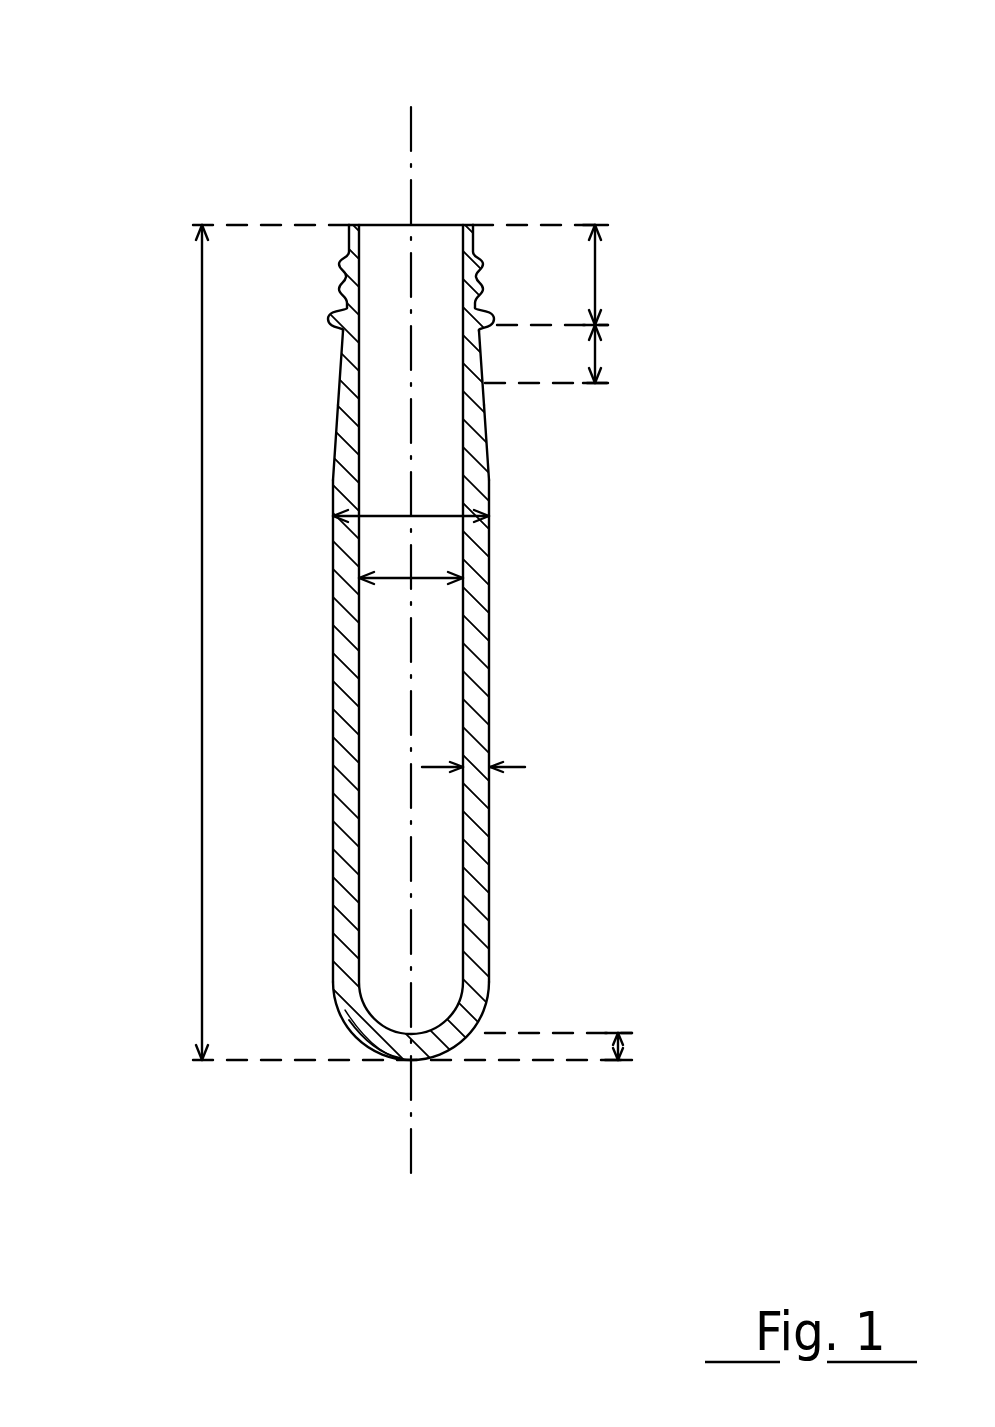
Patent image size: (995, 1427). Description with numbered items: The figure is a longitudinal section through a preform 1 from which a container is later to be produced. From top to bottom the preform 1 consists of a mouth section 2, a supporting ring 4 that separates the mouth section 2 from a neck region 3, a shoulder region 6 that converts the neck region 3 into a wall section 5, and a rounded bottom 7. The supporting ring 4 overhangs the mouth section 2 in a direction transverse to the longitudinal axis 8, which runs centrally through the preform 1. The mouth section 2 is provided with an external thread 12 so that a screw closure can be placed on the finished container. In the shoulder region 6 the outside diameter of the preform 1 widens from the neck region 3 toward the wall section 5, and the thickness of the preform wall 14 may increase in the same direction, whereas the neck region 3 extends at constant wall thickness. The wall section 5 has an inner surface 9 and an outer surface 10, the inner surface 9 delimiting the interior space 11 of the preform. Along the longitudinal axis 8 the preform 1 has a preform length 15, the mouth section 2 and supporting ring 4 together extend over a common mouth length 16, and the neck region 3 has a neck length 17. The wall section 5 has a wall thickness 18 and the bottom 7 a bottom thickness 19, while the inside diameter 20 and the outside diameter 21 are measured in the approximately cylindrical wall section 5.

The preform 1 is at (478, 658).
The mouth section 2 is at (435, 245).
The neck region 3 is at (338, 352).
The supporting ring 4 is at (327, 322).
The wall section 5 is at (331, 612).
The shoulder region 6 is at (332, 412).
The bottom 7 is at (394, 1060).
The longitudinal axis 8 is at (417, 122).
The inner surface 9 is at (457, 705).
The outer surface 10 is at (492, 704).
The interior space 11 is at (436, 845).
The external thread 12 is at (478, 252).
The preform wall 14 is at (473, 553).
The preform length 15 is at (202, 843).
The mouth length 16 is at (595, 272).
The neck length 17 is at (600, 352).
The wall thickness 18 is at (513, 770).
The bottom thickness 19 is at (627, 1041).
The inside diameter 20 is at (463, 585).
The outside diameter 21 is at (428, 513).